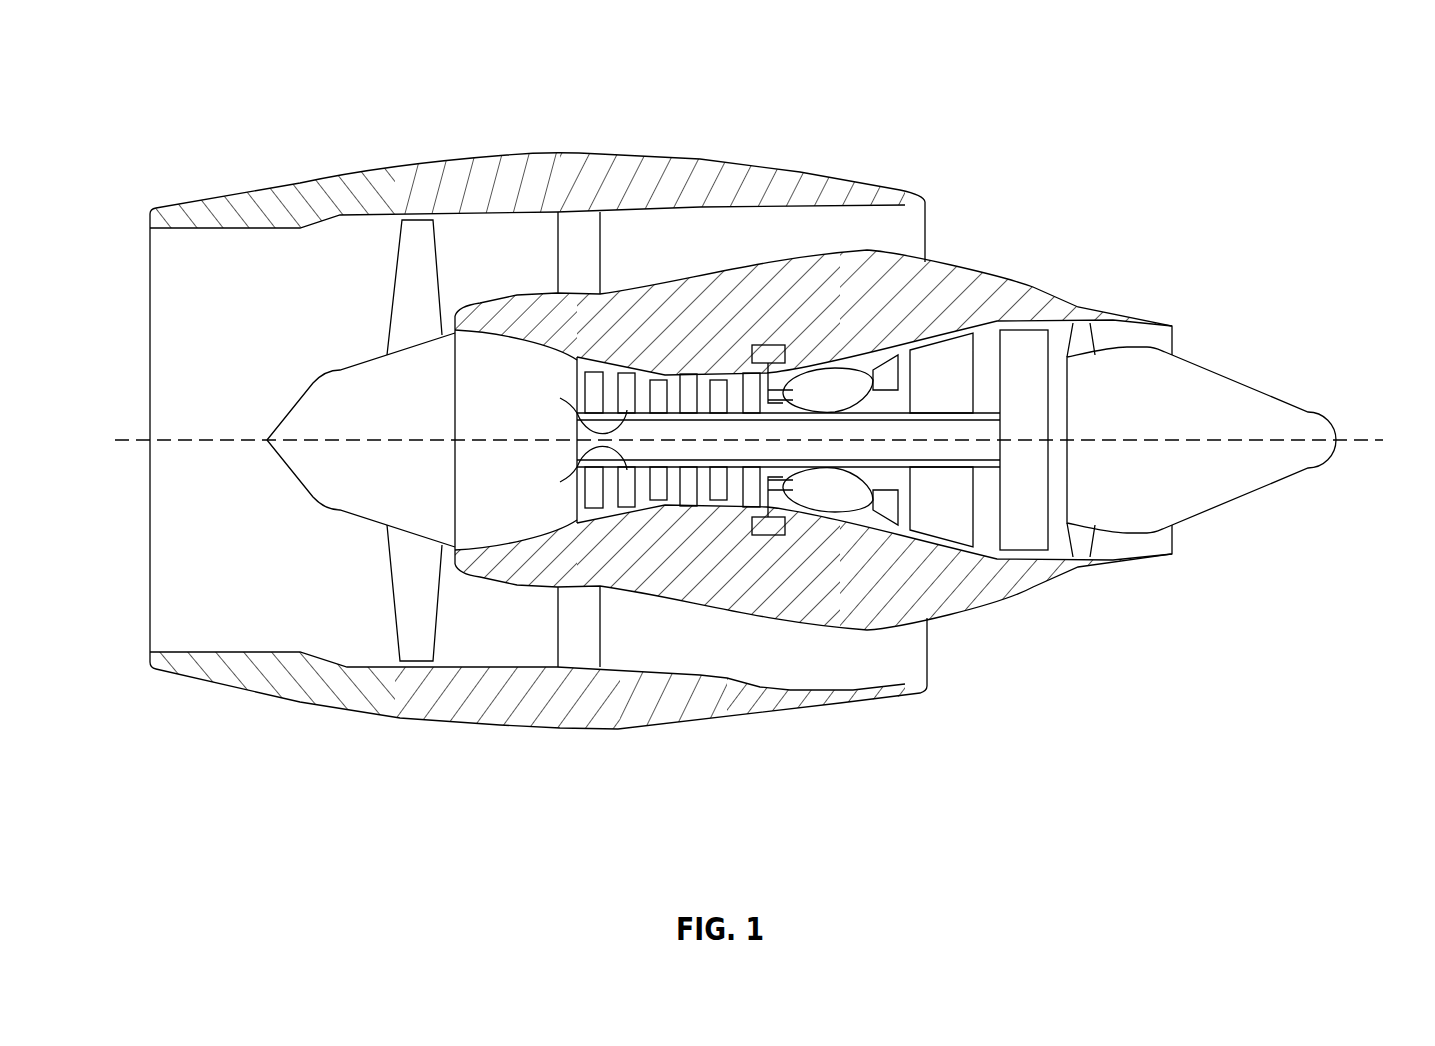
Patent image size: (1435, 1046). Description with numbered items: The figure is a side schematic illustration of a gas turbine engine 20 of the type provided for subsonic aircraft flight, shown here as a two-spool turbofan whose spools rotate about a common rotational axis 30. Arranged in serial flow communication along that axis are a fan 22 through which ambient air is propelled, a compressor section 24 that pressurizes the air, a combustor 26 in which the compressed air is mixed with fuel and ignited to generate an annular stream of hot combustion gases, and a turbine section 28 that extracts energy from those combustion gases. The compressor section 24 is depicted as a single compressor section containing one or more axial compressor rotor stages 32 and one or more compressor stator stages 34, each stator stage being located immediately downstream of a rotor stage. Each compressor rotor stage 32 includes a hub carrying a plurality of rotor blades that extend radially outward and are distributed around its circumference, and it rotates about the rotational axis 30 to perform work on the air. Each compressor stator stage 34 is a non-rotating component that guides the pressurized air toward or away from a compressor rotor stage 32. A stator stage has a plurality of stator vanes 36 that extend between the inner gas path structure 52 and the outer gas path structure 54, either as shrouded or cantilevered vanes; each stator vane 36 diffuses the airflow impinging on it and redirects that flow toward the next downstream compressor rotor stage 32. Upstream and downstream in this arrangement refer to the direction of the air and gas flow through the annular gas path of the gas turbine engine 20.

The gas turbine engine 20 is at (1112, 89).
The fan 22 is at (407, 610).
The compressor section 24 is at (587, 527).
The combustor 26 is at (847, 390).
The turbine section 28 is at (898, 533).
The rotational axis 30 is at (1377, 440).
The compressor rotor stage 32 is at (718, 380).
The compressor stator stage 34 is at (752, 493).
The stator vane 36 is at (658, 380).
The inner gas path structure 52 is at (577, 413).
The outer gas path structure 54 is at (613, 373).